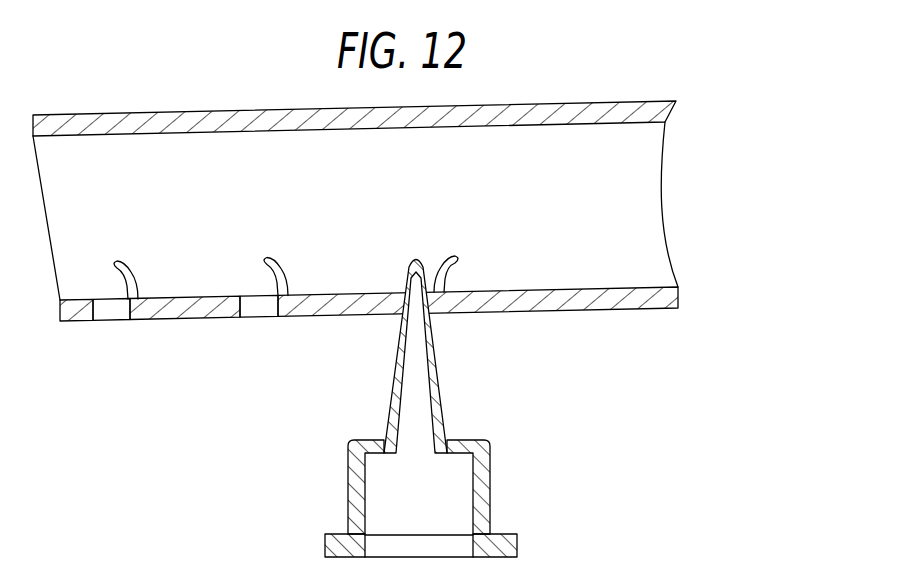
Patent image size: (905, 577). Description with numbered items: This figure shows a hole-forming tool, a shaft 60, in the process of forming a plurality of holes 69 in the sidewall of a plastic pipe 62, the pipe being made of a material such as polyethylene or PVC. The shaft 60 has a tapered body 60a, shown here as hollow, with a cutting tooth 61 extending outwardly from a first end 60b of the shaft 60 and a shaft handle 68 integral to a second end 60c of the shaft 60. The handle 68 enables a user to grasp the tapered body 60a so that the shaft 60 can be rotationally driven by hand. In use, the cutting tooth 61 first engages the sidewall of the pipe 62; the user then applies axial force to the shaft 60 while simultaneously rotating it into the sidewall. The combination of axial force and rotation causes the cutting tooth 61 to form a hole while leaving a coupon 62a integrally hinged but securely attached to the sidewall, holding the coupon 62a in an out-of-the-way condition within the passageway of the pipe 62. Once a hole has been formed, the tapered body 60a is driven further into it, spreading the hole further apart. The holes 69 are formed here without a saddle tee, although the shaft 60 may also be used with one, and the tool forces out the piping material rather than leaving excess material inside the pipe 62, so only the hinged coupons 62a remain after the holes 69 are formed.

The shaft 60 is at (433, 368).
The tapered body 60a is at (437, 352).
The first end 60b is at (408, 276).
The second end 60c is at (348, 534).
The cutting tooth 61 is at (420, 263).
The plastic pipe 62 is at (468, 105).
The coupon 62a is at (268, 266).
The shaft handle 68 is at (517, 540).
The holes 69 is at (257, 310).